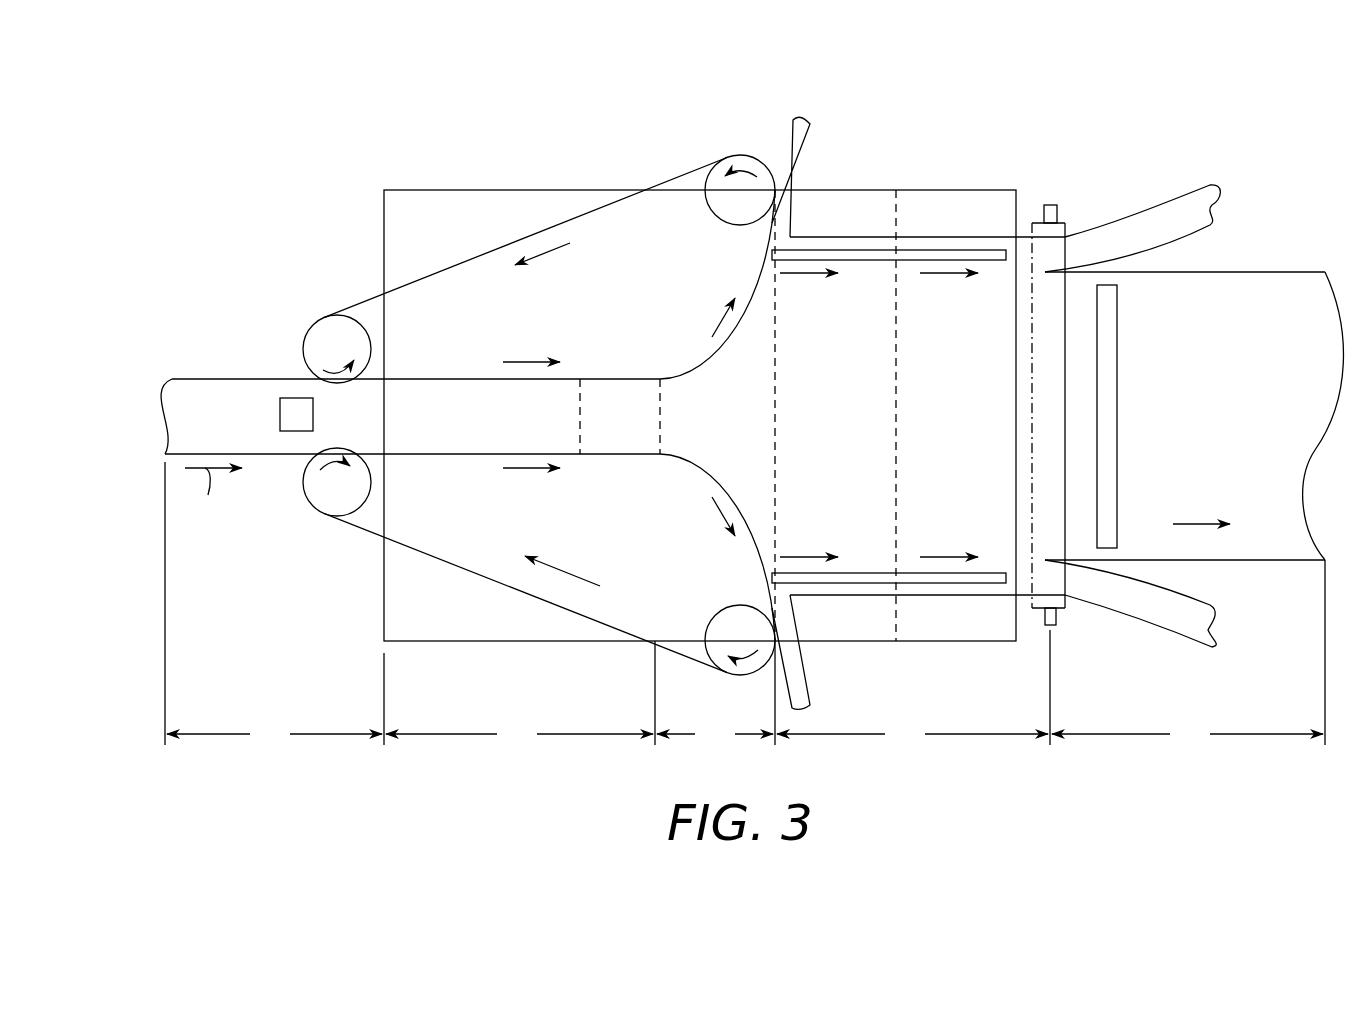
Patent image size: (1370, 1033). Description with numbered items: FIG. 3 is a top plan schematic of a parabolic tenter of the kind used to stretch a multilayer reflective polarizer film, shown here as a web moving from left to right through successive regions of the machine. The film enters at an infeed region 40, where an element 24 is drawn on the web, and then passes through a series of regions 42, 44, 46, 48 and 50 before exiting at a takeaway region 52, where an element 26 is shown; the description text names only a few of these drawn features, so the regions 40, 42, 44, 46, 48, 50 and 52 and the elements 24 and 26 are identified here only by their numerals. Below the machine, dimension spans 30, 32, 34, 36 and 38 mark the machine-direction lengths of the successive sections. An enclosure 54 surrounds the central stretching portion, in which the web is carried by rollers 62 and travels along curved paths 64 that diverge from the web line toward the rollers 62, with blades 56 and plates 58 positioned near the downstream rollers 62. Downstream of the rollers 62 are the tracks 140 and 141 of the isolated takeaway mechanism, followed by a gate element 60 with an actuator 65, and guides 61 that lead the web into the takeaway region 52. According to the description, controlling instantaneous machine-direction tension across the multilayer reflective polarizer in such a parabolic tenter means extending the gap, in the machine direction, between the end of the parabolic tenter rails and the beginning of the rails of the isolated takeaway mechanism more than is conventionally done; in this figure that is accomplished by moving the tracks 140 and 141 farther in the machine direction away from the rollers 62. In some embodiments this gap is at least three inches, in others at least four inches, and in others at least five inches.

The sensor 24 is at (290, 405).
The sensor bar 26 is at (1108, 322).
The infeed section length 30 is at (274, 605).
The first section length 32 is at (520, 695).
The second section length 34 is at (716, 695).
The third section length 36 is at (913, 689).
The outfeed section length 38 is at (1188, 654).
The infeed zone 40 is at (190, 427).
The first zone 42 is at (455, 427).
The second zone 44 is at (605, 427).
The third zone 46 is at (703, 427).
The fourth zone 48 is at (827, 427).
The fifth zone 50 is at (945, 427).
The outfeed zone 52 is at (1213, 427).
The housing 54 is at (496, 188).
The blade 56 is at (797, 118).
The plate 58 is at (790, 237).
The gate 60 is at (1046, 270).
The guide 61 is at (1145, 228).
The rollers 62 is at (320, 333).
The web path curve 64 is at (703, 372).
The actuator 65 is at (1058, 623).
The track 140 is at (867, 262).
The track 141 is at (866, 573).